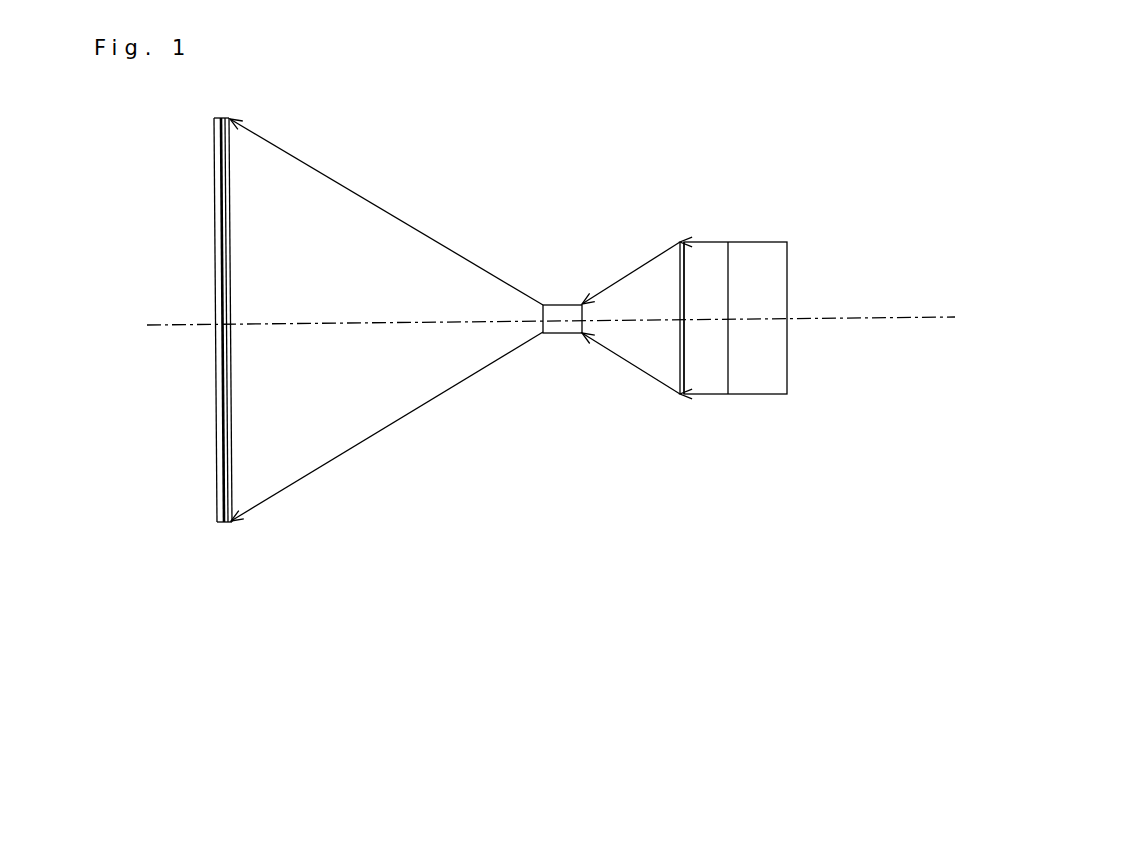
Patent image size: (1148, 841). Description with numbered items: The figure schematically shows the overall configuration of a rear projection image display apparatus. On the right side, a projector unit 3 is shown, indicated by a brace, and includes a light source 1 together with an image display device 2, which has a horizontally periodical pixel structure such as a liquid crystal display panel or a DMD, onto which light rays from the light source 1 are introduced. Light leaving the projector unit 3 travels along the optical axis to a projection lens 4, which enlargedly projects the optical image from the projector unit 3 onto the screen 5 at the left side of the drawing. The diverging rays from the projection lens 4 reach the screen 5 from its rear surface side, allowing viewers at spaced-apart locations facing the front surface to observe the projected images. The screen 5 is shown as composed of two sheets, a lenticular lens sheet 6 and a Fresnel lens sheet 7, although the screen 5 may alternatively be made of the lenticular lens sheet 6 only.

The light source 1 is at (773, 395).
The image display device 2 is at (681, 397).
The projector unit 3 is at (712, 438).
The projection lens 4 is at (566, 303).
The screen 5 is at (238, 385).
The lenticular lens sheet 6 is at (219, 527).
The Fresnel lens sheet 7 is at (230, 527).